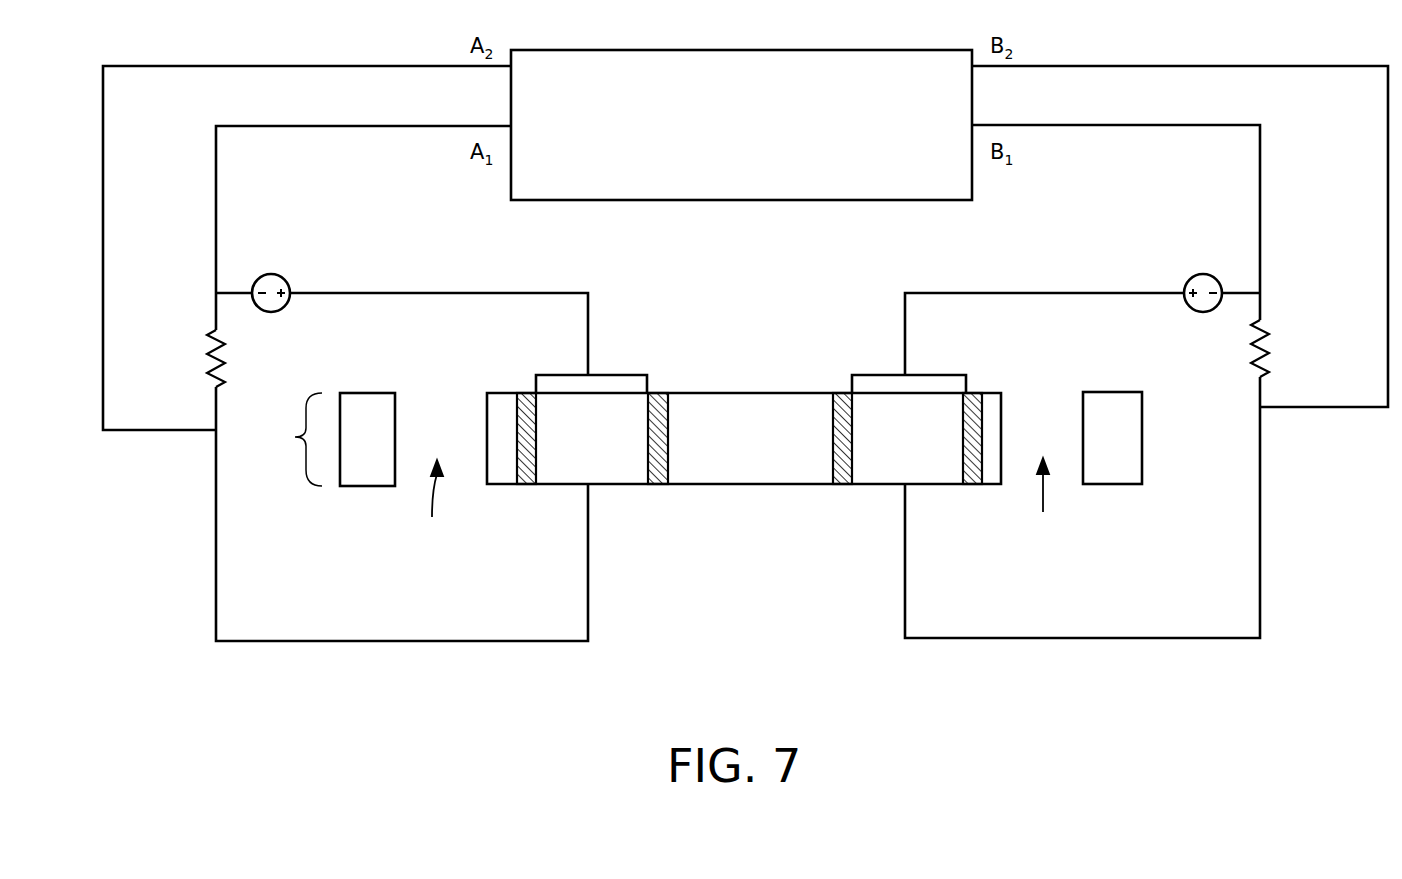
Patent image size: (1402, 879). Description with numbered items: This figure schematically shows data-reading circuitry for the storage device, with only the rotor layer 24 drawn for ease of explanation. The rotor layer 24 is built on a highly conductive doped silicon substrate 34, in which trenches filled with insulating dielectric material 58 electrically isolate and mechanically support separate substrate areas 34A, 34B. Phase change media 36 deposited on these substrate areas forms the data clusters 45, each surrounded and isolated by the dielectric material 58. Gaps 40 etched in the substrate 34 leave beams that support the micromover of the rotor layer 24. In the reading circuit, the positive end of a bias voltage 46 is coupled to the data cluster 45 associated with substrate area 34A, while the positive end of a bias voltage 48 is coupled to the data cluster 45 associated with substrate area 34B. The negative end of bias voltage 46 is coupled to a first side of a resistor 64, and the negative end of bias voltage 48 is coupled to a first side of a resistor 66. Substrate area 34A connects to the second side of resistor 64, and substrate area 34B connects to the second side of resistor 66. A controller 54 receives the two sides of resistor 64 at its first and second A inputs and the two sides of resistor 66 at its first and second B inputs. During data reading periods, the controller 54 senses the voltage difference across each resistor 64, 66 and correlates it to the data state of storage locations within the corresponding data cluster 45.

The controller 54 is at (822, 67).
The bias voltage 46 is at (272, 313).
The bias voltage 48 is at (1205, 313).
The resistor 64 is at (205, 384).
The resistor 66 is at (1267, 358).
The rotor layer 24 is at (288, 439).
The substrate 34 is at (367, 468).
The substrate area 34A is at (613, 473).
The substrate area 34B is at (885, 473).
The phase change media 36 is at (603, 385).
The data cluster 45 is at (893, 385).
The dielectric material 58 is at (538, 428).
The gap 40 is at (739, 505).